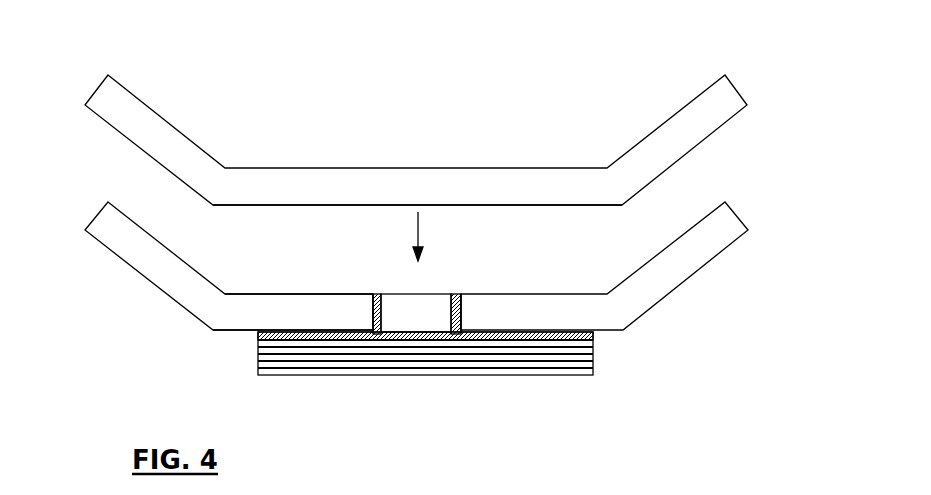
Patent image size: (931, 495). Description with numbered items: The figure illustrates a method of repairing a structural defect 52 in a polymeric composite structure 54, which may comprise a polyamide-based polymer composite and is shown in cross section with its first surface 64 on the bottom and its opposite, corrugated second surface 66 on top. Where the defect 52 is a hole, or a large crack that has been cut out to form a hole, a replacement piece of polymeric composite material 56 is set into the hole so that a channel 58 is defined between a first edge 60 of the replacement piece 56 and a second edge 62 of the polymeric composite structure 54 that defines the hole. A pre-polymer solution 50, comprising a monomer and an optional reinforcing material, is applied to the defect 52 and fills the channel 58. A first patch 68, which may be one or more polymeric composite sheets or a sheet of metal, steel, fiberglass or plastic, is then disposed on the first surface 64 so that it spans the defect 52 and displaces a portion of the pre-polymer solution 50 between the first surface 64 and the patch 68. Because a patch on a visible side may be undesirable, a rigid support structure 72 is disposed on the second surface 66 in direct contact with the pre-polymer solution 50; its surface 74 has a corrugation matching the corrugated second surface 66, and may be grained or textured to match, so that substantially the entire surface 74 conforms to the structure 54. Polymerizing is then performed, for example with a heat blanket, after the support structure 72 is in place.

The pre-polymer solution 50 is at (462, 318).
The defect 52 is at (412, 350).
The polymeric composite structure 54 is at (108, 249).
The replacement piece of polymeric composite material 56 is at (420, 297).
The channel 58 is at (364, 301).
The first edge 60 is at (376, 293).
The second edge 62 is at (457, 296).
The first surface 64 is at (225, 332).
The second surface 66 is at (240, 292).
The first patch 68 is at (595, 340).
The support structure 72 is at (672, 117).
The surface 74 is at (515, 205).